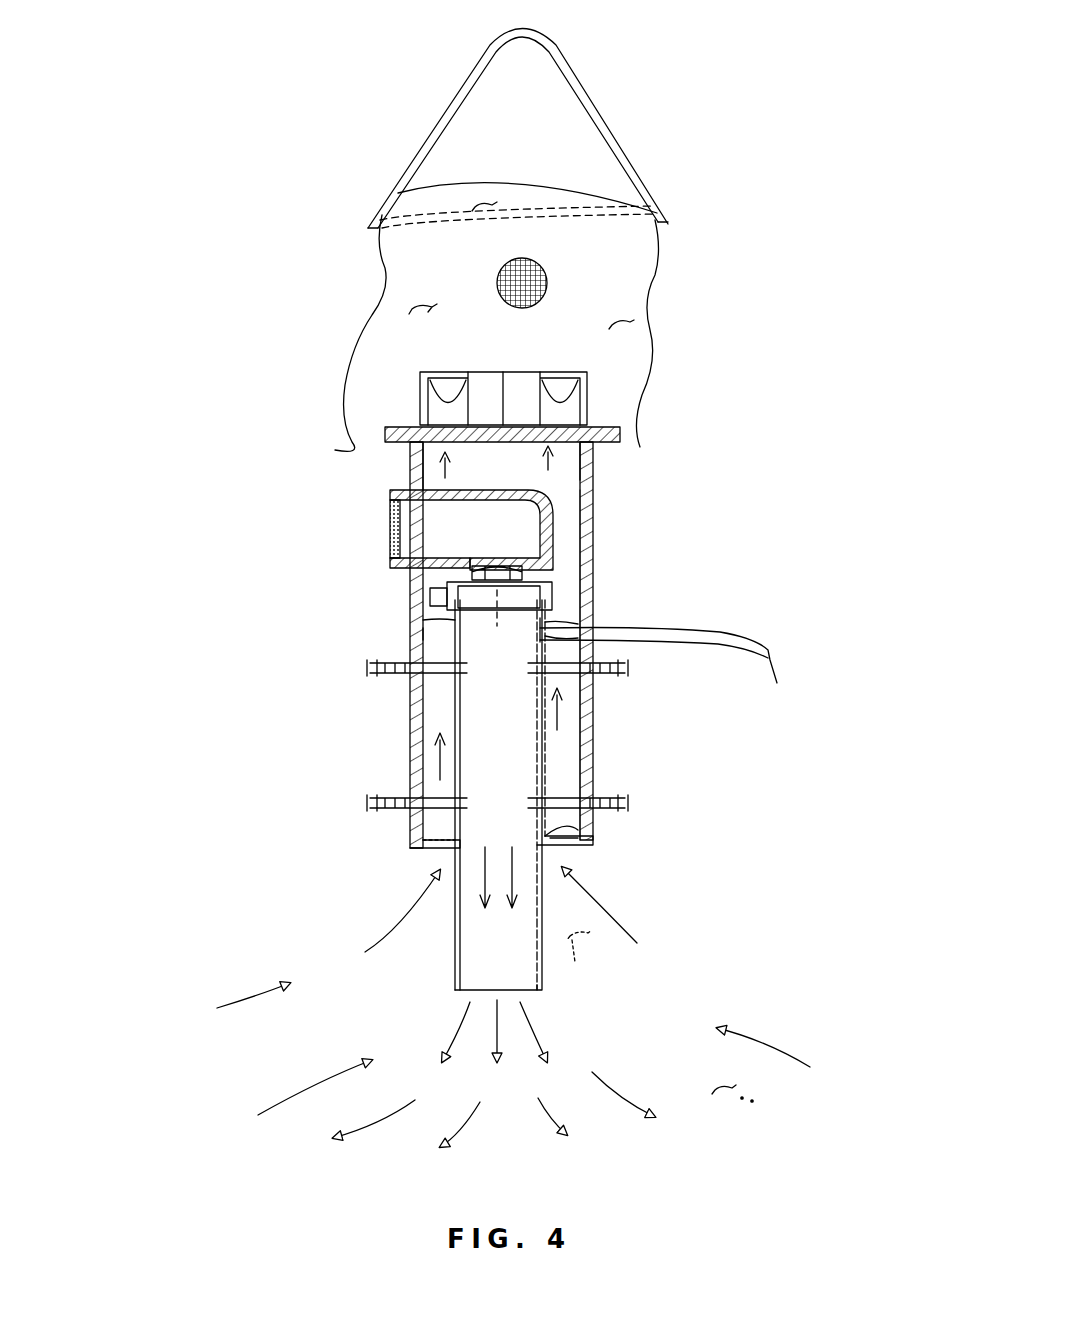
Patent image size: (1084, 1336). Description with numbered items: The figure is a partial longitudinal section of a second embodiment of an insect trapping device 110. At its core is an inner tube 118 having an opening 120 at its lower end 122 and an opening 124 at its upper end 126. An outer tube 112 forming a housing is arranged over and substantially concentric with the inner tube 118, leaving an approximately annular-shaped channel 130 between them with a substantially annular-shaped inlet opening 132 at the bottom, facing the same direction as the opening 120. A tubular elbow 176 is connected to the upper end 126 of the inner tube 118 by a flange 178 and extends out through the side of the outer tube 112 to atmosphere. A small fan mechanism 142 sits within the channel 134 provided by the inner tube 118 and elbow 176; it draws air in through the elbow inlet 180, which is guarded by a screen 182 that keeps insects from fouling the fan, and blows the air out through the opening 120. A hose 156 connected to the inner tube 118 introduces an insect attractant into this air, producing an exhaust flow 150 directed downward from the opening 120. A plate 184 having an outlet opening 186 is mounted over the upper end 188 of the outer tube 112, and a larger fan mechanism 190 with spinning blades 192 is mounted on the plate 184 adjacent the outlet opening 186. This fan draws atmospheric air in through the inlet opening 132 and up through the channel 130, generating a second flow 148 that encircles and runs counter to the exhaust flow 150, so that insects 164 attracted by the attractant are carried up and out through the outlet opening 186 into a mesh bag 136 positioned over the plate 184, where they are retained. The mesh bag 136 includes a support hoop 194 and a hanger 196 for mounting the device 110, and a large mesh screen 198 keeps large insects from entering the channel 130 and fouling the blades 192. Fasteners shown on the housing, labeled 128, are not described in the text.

The insect trapping device 110 is at (295, 600).
The outer tube 112 is at (594, 576).
The inner tube 118 is at (416, 628).
The opening 120 is at (468, 996).
The lower end 122 is at (458, 970).
The opening 124 is at (552, 590).
The upper end 126 is at (578, 620).
The fasteners 128 is at (372, 800).
The channel 130 is at (575, 742).
The inlet opening 132 is at (420, 850).
The channel 134 is at (460, 693).
The mesh bag 136 is at (553, 285).
The fan mechanism 142 is at (490, 565).
The second flow 148 is at (385, 932).
The exhaust flow 150 is at (378, 1120).
The hose 156 is at (672, 670).
The insects 164 is at (405, 306).
The tubular elbow 176 is at (430, 490).
The flange 178 is at (428, 592).
The inlet 180 is at (390, 545).
The screen 182 is at (390, 515).
The plate 184 is at (595, 443).
The outlet opening 186 is at (412, 460).
The upper end 188 is at (594, 506).
The fan mechanism 190 is at (590, 382).
The blades 192 is at (560, 382).
The support hoop 194 is at (378, 232).
The hanger 196 is at (432, 133).
The mesh screen 198 is at (593, 828).